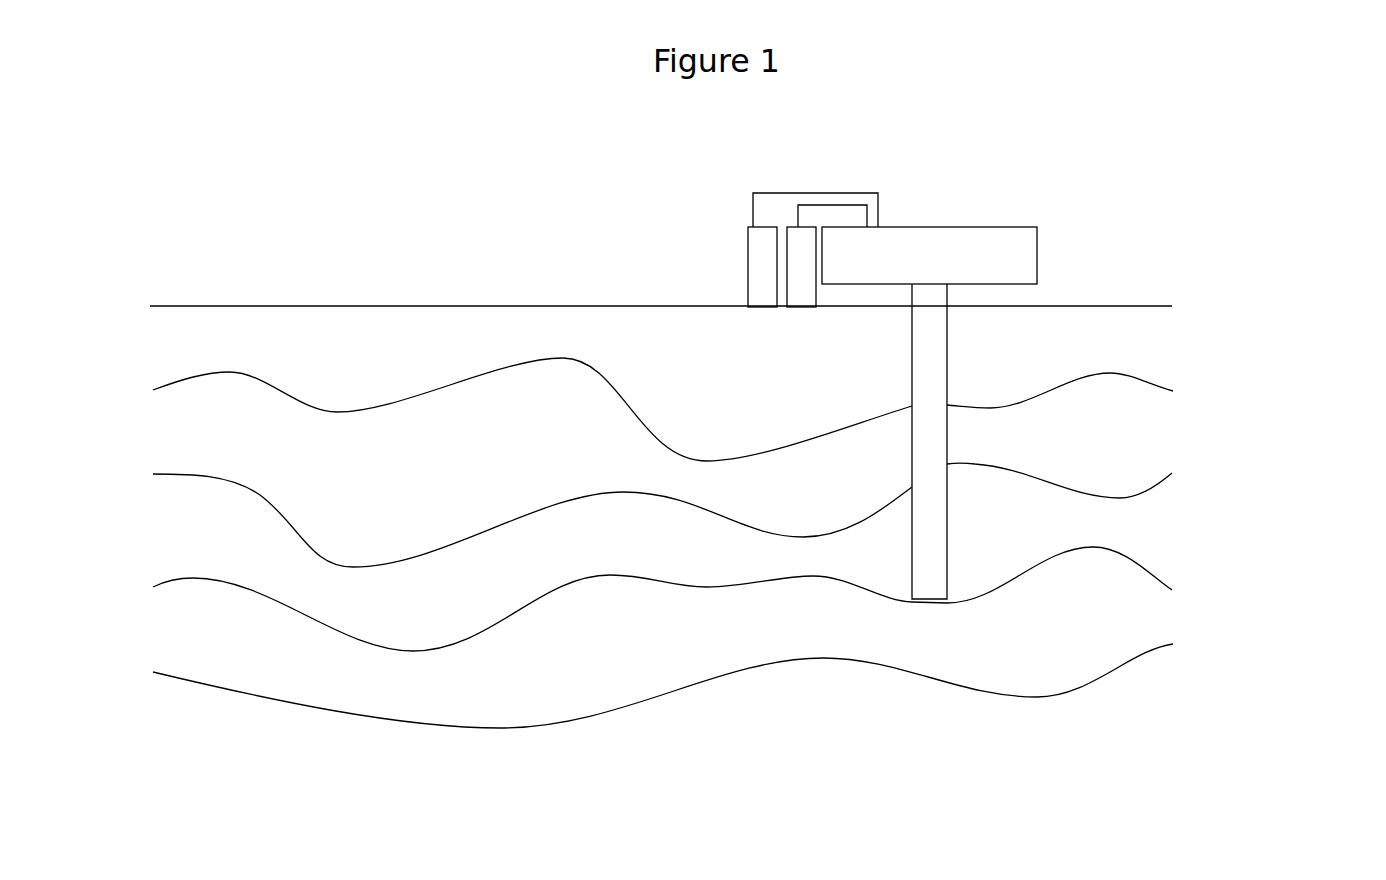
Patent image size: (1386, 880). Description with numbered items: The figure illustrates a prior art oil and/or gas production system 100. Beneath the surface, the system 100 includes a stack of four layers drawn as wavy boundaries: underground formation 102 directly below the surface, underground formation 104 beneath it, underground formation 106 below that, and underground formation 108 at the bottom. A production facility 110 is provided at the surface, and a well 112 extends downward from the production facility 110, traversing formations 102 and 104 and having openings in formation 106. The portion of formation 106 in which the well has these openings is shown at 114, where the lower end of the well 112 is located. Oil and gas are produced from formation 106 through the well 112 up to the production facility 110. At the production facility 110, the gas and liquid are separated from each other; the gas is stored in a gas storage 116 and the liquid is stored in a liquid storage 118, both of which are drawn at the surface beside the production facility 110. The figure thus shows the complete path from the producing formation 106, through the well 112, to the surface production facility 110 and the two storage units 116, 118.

The system 100 is at (560, 170).
The underground formation 102 is at (663, 406).
The underground formation 104 is at (662, 494).
The underground formation 106 is at (662, 574).
The underground formation 108 is at (663, 657).
The production facility 110 is at (948, 266).
The well 112 is at (947, 333).
The portion of formation 114 is at (889, 565).
The gas storage 116 is at (800, 249).
The liquid storage 118 is at (765, 250).